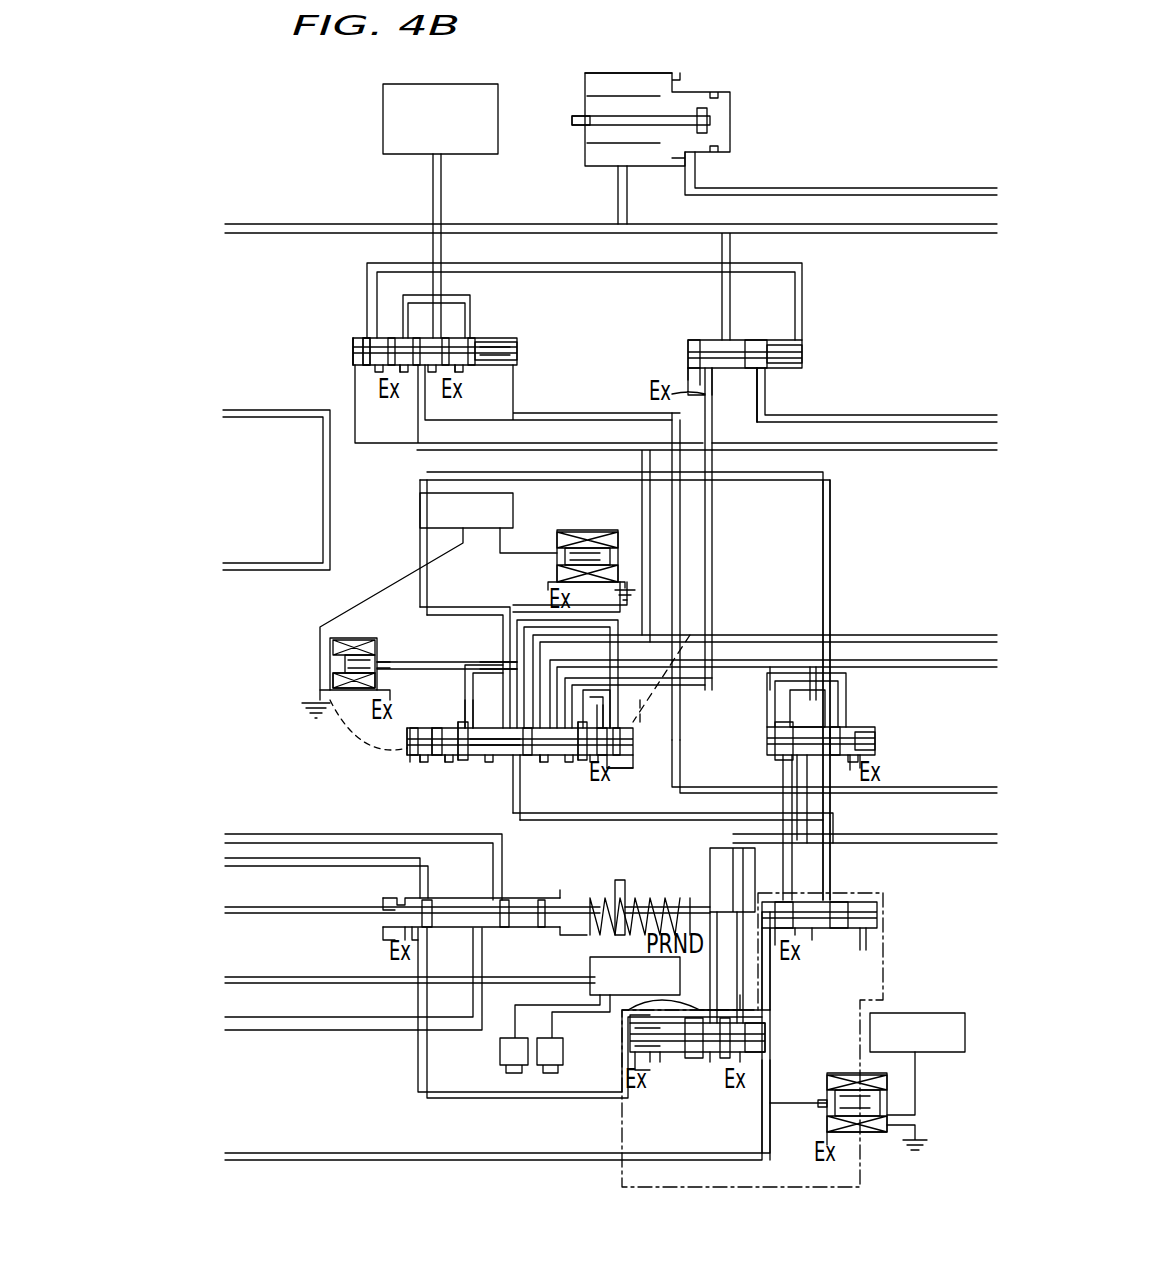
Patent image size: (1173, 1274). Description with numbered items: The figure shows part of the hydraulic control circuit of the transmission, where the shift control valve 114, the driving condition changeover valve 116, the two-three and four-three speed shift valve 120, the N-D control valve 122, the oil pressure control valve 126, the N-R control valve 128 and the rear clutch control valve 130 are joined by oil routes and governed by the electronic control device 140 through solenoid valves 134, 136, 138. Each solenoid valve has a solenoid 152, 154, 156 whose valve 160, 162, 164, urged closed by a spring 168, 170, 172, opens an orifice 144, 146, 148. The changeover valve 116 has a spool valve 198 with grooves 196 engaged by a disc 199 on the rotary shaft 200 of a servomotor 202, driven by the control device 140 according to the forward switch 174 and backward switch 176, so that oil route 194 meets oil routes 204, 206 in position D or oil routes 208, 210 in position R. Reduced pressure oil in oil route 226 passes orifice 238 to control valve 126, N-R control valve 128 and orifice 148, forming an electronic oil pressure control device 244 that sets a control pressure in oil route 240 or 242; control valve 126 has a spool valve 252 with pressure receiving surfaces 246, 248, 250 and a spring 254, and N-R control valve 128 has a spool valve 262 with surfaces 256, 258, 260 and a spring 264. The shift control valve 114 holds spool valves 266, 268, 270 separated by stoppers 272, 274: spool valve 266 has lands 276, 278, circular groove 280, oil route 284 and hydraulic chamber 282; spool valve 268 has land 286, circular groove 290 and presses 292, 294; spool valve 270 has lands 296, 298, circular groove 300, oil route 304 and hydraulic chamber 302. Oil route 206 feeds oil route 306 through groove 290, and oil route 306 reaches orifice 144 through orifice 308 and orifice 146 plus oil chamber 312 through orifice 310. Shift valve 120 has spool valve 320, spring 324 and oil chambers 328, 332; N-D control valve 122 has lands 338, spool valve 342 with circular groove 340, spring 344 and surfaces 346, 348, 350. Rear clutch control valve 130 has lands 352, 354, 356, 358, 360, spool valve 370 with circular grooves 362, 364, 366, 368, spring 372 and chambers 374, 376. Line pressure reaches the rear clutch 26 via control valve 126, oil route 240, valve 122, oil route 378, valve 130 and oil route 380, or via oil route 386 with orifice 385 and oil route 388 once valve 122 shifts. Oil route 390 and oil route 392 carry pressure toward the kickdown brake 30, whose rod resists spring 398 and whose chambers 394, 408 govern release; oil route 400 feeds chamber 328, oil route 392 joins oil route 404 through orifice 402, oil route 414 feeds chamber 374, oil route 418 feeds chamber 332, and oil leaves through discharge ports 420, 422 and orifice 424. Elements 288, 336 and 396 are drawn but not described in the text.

The rear clutch 26 is at (498, 86).
The kickdown brake 30 is at (696, 84).
The shift control valve 114 is at (615, 762).
The driving condition changeover valve 116 is at (528, 894).
The 2-3 speed and 4-3 speed shift valve 120 is at (812, 326).
The N-D control valve 122 is at (890, 734).
The oil pressure control valve 126 is at (890, 914).
The N-R control valve 128 is at (780, 1047).
The rear clutch control valve 130 is at (520, 312).
The solenoid valve 134 is at (575, 532).
The solenoid valve 136 is at (318, 712).
The solenoid valve 138 is at (865, 1142).
The electronic control device 140 is at (448, 525).
The orifice 144 is at (540, 550).
The orifice 146 is at (395, 660).
The orifice 148 is at (822, 1107).
The solenoid 152 is at (580, 535).
The solenoid 154 is at (335, 640).
The solenoid 156 is at (917, 1147).
The valve 160 is at (557, 570).
The valve 162 is at (360, 690).
The valve 164 is at (855, 1137).
The spring 168 is at (607, 598).
The spring 170 is at (340, 660).
The spring 172 is at (845, 1097).
The forward switch 174 is at (500, 1052).
The backward switch 176 is at (563, 1057).
The oil route 194 is at (342, 1030).
The grooves 196 is at (600, 937).
The spool valve 198 is at (450, 927).
The disc 199 is at (618, 880).
The rotary shaft 200 is at (660, 897).
The servomotor 202 is at (712, 854).
The oil route 204 is at (250, 834).
The oil route 206 is at (833, 815).
The oil route 208 is at (322, 514).
The oil route 210 is at (400, 977).
The oil route 226 is at (486, 1153).
The orifice 238 is at (766, 1117).
The oil route 240 is at (590, 418).
The oil route 242 is at (715, 1014).
The electronic oil pressure control device 244 is at (883, 987).
The pressure receiving surface 246 is at (780, 937).
The pressure receiving surface 248 is at (812, 932).
The pressure receiving surface 250 is at (820, 930).
The spool valve 252 is at (855, 937).
The spring 254 is at (850, 907).
The pressure receiving surface 256 is at (760, 1042).
The pressure receiving surface 258 is at (635, 1020).
The pressure receiving surface 260 is at (700, 1057).
The spool valve 262 is at (728, 1057).
The spring 264 is at (650, 1062).
The spool valve 266 is at (420, 764).
The spool valve 268 is at (520, 772).
The spool valve 270 is at (618, 770).
The stopper 272 is at (463, 760).
The stopper 274 is at (582, 762).
The land 276 is at (412, 760).
The land 278 is at (437, 760).
The circular groove 280 is at (380, 660).
The hydraulic chamber 282 is at (407, 742).
The oil route 284 is at (407, 752).
The land 286 is at (458, 732).
The line 288 is at (466, 715).
The circular groove 290 is at (500, 750).
The press 292 is at (345, 600).
The press 294 is at (540, 757).
The land 296 is at (600, 662).
The land 298 is at (633, 747).
The circular groove 300 is at (590, 692).
The hydraulic chamber 302 is at (672, 672).
The oil route 304 is at (610, 712).
The oil route 306 is at (490, 640).
The orifice 308 is at (520, 650).
The orifice 310 is at (490, 664).
The oil chamber 312 is at (440, 762).
The spool valve 320 is at (738, 342).
The spring 324 is at (775, 368).
The oil chamber 328 is at (695, 340).
The oil chamber 332 is at (802, 356).
The line 336 is at (772, 727).
The lands 338 is at (838, 737).
The circular groove 340 is at (820, 717).
The spool valve 342 is at (767, 750).
The spring 344 is at (875, 742).
The pressure receiving surface 346 is at (786, 762).
The pressure receiving surface 348 is at (810, 762).
The pressure receiving surface 350 is at (870, 760).
The land 352 is at (362, 338).
The land 354 is at (400, 380).
The land 356 is at (529, 404).
The land 358 is at (445, 380).
The land 360 is at (500, 385).
The circular groove 362 is at (366, 342).
The circular groove 364 is at (392, 338).
The circular groove 366 is at (445, 338).
The circular groove 368 is at (448, 342).
The spool valve 370 is at (355, 342).
The spring 372 is at (510, 343).
The hydraulic chamber 374 is at (353, 356).
The hydraulic chamber 376 is at (517, 356).
The oil route 378 is at (530, 472).
The oil route 380 is at (442, 190).
The orifice 385 is at (860, 662).
The oil route 386 is at (760, 664).
The oil route 388 is at (815, 662).
The oil route 390 is at (968, 637).
The oil route 392 is at (945, 188).
The oil hydraulic chamber 394 is at (705, 166).
The shaft 396 is at (578, 122).
The spring 398 is at (648, 166).
The oil route 400 is at (700, 450).
The orifice 402 is at (752, 398).
The oil route 404 is at (318, 224).
The hydraulic chamber 408 is at (614, 73).
The oil route 414 is at (355, 410).
The oil route 418 is at (608, 268).
The oil discharge port 420 is at (420, 500).
The oil discharge port 422 is at (693, 368).
The orifice 424 is at (700, 378).